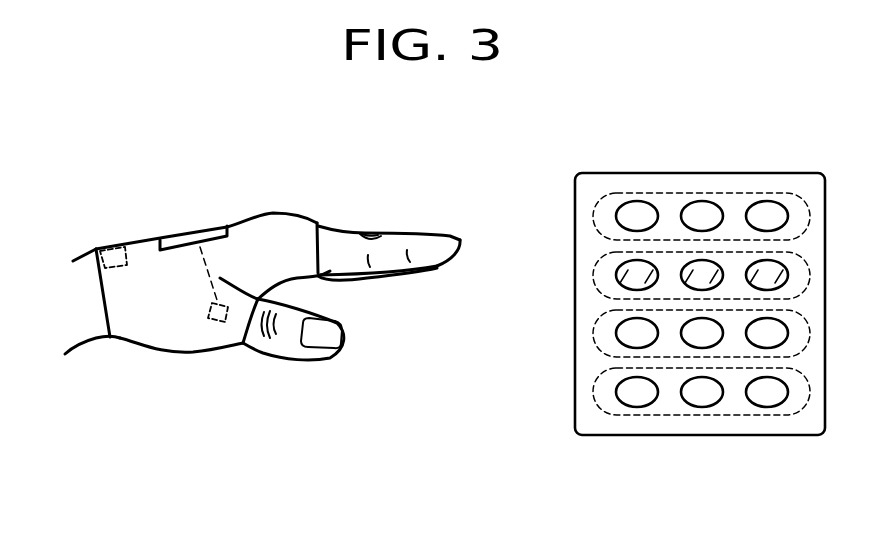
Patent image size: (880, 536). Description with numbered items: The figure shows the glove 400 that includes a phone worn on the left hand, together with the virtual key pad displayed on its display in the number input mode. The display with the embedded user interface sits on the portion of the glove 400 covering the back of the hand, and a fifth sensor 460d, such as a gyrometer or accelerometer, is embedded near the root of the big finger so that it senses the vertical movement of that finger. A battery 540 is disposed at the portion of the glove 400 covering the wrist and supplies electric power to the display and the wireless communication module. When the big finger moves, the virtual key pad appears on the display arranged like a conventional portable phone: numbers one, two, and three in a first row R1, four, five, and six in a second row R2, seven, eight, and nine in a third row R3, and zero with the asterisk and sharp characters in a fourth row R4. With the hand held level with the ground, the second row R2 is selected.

The glove 400 is at (152, 344).
The fifth sensor 460d is at (221, 322).
The battery 540 is at (113, 249).
The first row R1 is at (593, 215).
The second row R2 is at (593, 274).
The third row R3 is at (593, 332).
The fourth row R4 is at (593, 390).